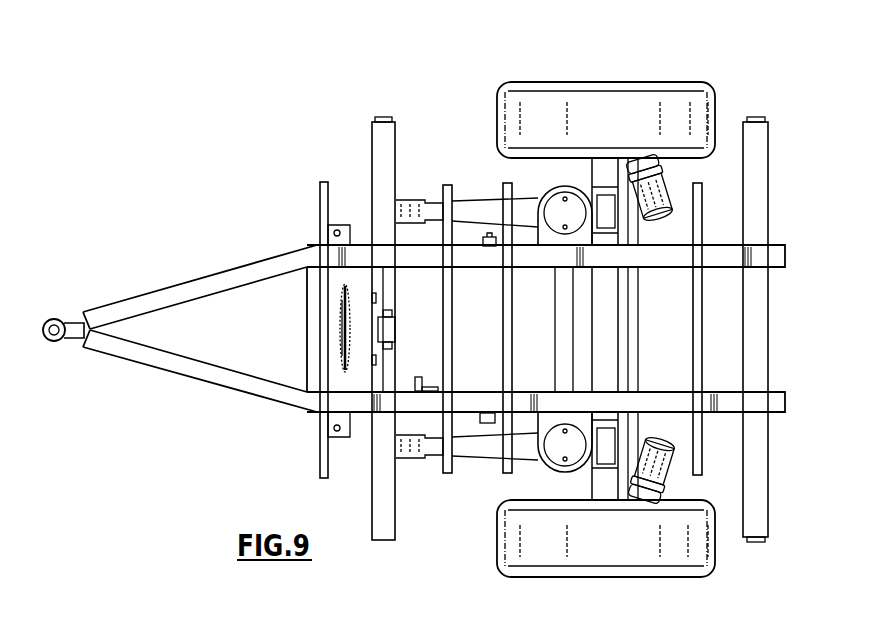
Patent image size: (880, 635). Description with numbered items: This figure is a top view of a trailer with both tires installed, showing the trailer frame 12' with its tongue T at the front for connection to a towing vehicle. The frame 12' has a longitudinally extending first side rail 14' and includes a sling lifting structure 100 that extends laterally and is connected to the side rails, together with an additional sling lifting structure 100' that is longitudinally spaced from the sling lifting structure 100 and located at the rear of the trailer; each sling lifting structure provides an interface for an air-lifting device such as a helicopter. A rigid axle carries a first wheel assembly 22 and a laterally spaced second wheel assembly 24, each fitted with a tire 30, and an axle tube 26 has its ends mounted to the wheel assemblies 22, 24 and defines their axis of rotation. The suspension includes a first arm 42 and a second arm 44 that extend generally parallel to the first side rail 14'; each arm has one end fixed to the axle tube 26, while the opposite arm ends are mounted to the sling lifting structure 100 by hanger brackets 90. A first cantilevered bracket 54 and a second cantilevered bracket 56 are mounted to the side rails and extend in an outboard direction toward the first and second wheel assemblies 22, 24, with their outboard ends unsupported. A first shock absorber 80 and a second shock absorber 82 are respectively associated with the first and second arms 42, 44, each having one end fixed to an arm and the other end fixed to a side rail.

The tongue T is at (99, 311).
The trailer frame 12' is at (568, 251).
The first side rail 14' is at (568, 394).
The first wheel assembly 22 is at (722, 90).
The second wheel assembly 24 is at (724, 572).
The axle tube 26 is at (608, 357).
The tire 30 is at (590, 87).
The first arm 42 is at (462, 210).
The second arm 44 is at (478, 458).
The first cantilevered bracket 54 is at (558, 208).
The second cantilevered bracket 56 is at (558, 456).
The first shock absorber 80 is at (490, 248).
The second shock absorber 82 is at (523, 420).
The hanger bracket 90 is at (414, 214).
The sling lifting structure 100 is at (411, 328).
The additional sling lifting structure 100' is at (788, 329).